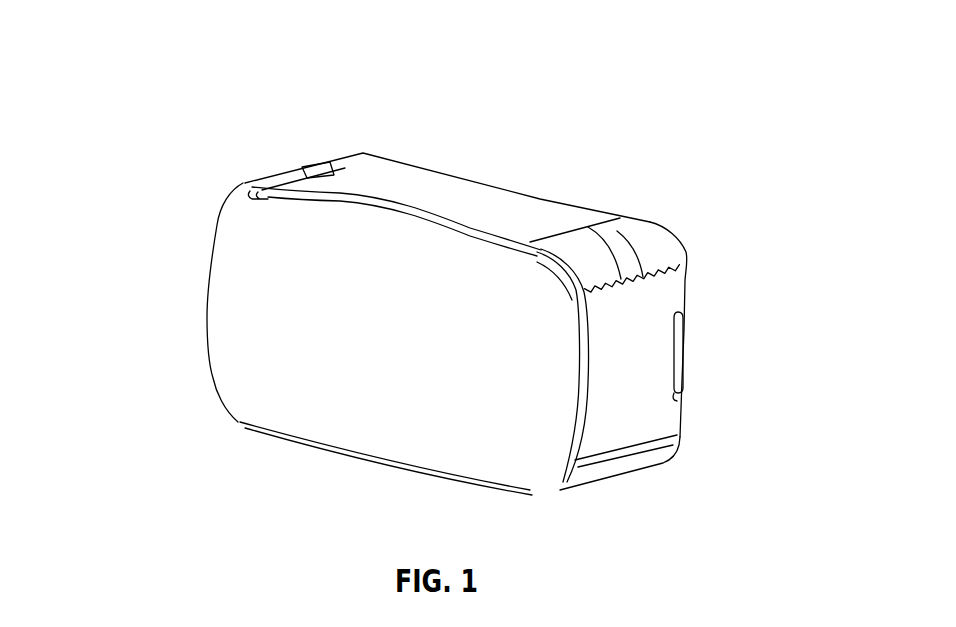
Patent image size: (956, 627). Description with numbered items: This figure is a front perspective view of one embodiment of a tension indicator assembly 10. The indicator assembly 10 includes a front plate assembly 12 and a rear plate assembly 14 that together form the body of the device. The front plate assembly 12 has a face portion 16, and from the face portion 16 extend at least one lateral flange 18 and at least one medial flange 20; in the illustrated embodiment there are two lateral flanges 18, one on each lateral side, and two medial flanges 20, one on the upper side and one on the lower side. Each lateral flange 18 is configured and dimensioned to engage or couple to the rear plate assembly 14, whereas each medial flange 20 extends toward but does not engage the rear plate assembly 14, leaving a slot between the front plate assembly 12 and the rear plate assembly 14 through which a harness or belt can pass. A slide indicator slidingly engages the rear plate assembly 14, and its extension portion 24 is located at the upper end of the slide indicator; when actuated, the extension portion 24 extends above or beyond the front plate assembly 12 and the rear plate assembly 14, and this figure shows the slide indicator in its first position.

The indicator assembly 10 is at (214, 166).
The front plate assembly 12 is at (228, 371).
The rear plate assembly 14 is at (660, 233).
The face portion 16 is at (530, 437).
The lateral flange 18 is at (653, 392).
The medial flange 20 is at (480, 202).
The extension portion 24 is at (312, 167).